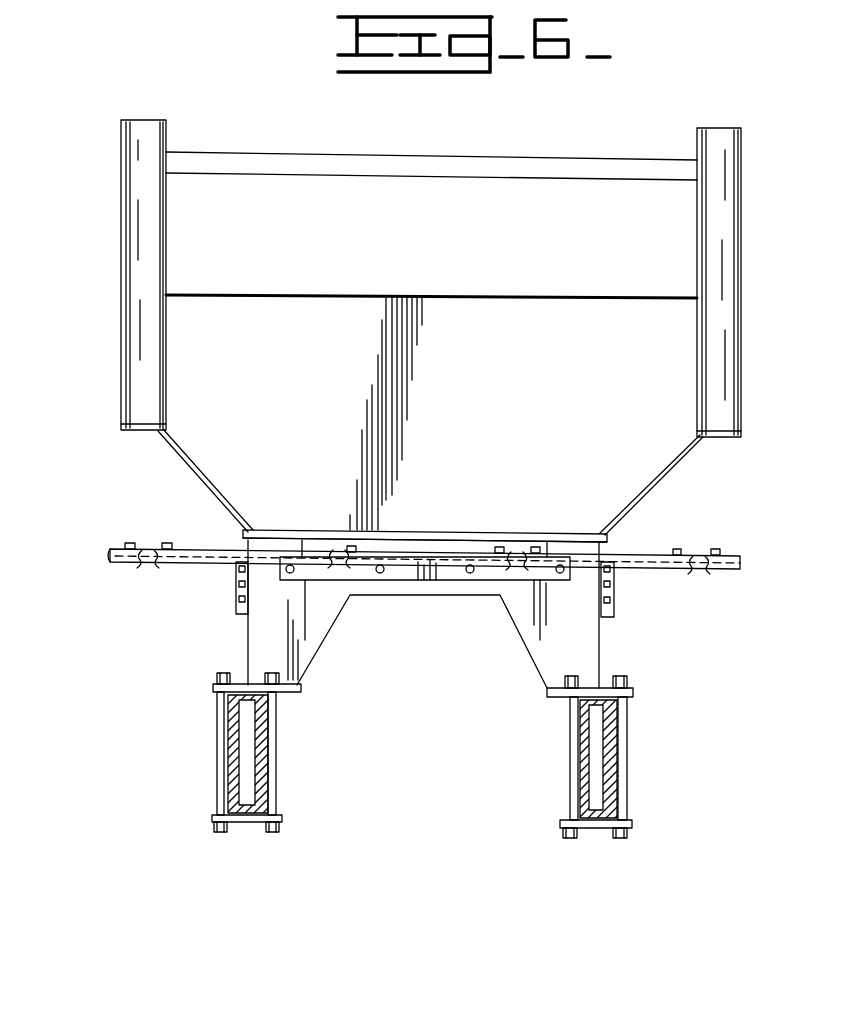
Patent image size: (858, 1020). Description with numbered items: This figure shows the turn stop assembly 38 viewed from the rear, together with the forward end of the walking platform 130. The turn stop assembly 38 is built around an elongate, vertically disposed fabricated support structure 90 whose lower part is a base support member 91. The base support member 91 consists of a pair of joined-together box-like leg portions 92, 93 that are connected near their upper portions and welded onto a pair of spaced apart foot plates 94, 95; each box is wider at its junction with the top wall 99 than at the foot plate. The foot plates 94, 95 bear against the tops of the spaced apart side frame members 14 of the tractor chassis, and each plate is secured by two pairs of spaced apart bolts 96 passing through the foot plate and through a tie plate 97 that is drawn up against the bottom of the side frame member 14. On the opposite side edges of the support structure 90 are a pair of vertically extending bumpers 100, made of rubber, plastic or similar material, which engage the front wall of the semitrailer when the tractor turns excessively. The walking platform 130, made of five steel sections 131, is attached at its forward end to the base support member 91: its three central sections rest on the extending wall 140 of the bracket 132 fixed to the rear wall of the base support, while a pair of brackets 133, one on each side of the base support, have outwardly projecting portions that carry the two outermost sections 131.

The side frame member 14 is at (262, 765).
The turn stop assembly 38 is at (469, 327).
The fabricated support structure 90 is at (410, 215).
The base support member 91 is at (440, 537).
The leg portion 92 is at (258, 633).
The leg portion 93 is at (582, 640).
The foot plate 94 is at (300, 688).
The foot plate 95 is at (548, 692).
The bolts 96 is at (218, 733).
The tie plate 97 is at (250, 822).
The top wall 99 is at (455, 537).
The bumpers 100 is at (147, 313).
The walking platform 130 is at (629, 546).
The sections 131 is at (643, 555).
The bracket 132 is at (447, 570).
The brackets 133 is at (238, 598).
The extending wall 140 is at (582, 518).